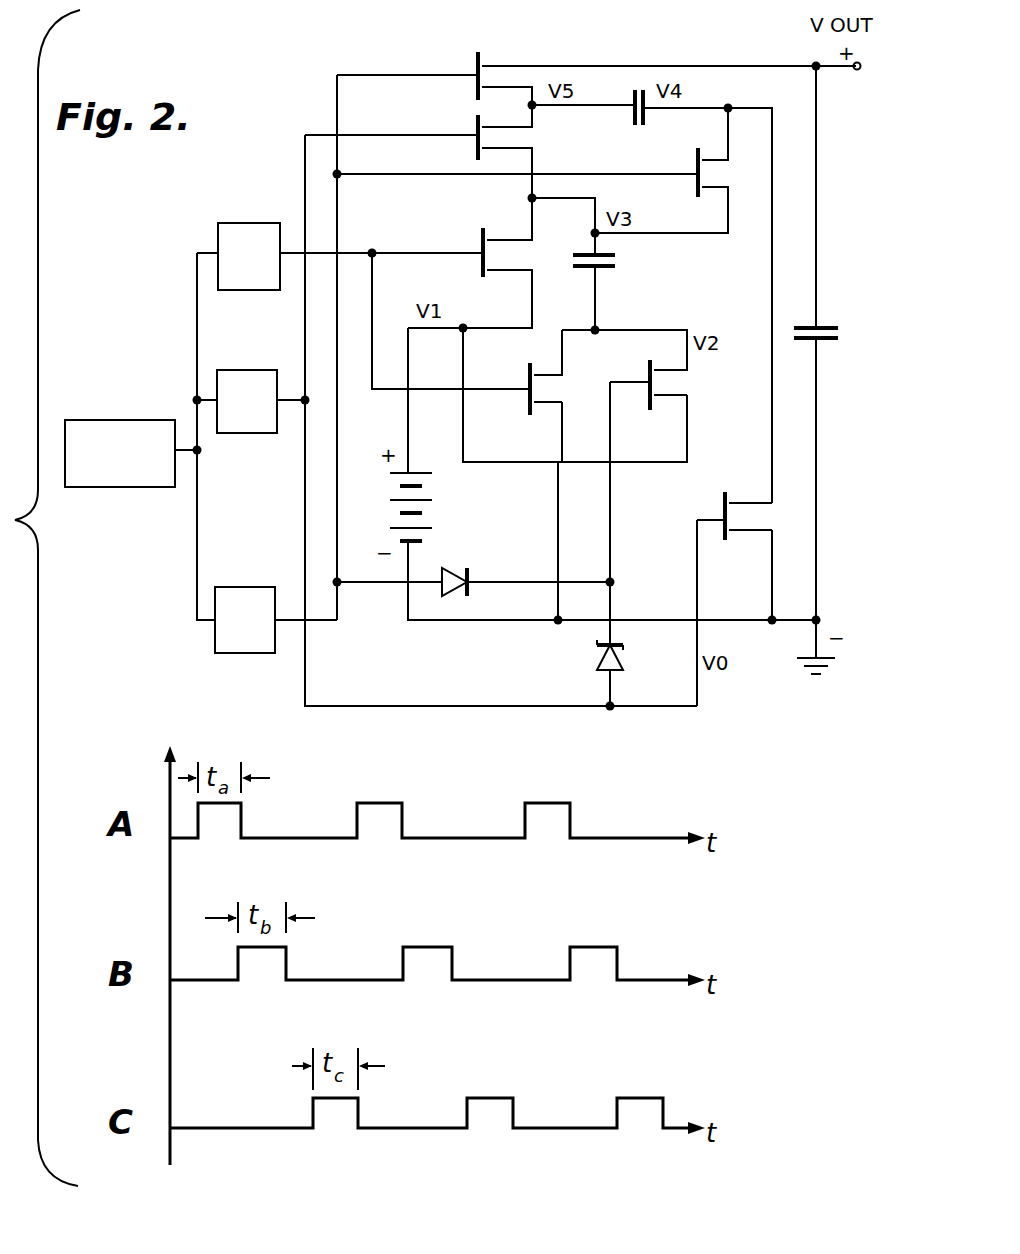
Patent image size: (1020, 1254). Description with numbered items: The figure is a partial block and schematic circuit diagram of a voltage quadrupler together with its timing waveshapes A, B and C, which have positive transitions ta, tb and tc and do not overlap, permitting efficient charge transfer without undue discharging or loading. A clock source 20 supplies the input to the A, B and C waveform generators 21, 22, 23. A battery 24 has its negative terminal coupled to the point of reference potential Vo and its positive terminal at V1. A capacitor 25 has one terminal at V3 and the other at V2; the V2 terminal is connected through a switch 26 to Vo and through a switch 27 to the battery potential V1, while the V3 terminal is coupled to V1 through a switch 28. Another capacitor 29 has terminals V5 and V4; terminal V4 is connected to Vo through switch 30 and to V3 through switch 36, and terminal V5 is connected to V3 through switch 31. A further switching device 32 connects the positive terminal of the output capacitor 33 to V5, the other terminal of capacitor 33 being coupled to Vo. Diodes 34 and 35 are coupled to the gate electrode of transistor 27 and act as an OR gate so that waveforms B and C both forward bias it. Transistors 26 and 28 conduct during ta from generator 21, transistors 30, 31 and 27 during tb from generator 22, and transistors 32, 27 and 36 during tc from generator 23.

The clock source 20 is at (127, 487).
The A waveform generator 21 is at (246, 223).
The B waveform generator 22 is at (237, 433).
The C waveform generator 23 is at (255, 653).
The battery 24 is at (428, 516).
The capacitor 25 is at (614, 268).
The switch 26 is at (528, 406).
The switch 27 is at (648, 402).
The switch 28 is at (482, 240).
The capacitor 29 is at (634, 112).
The switch 30 is at (724, 494).
The switch 31 is at (477, 120).
The switching device 32 is at (477, 62).
The output capacitor 33 is at (824, 326).
The diode 34 is at (598, 648).
The diode 35 is at (471, 568).
The switch 36 is at (710, 183).